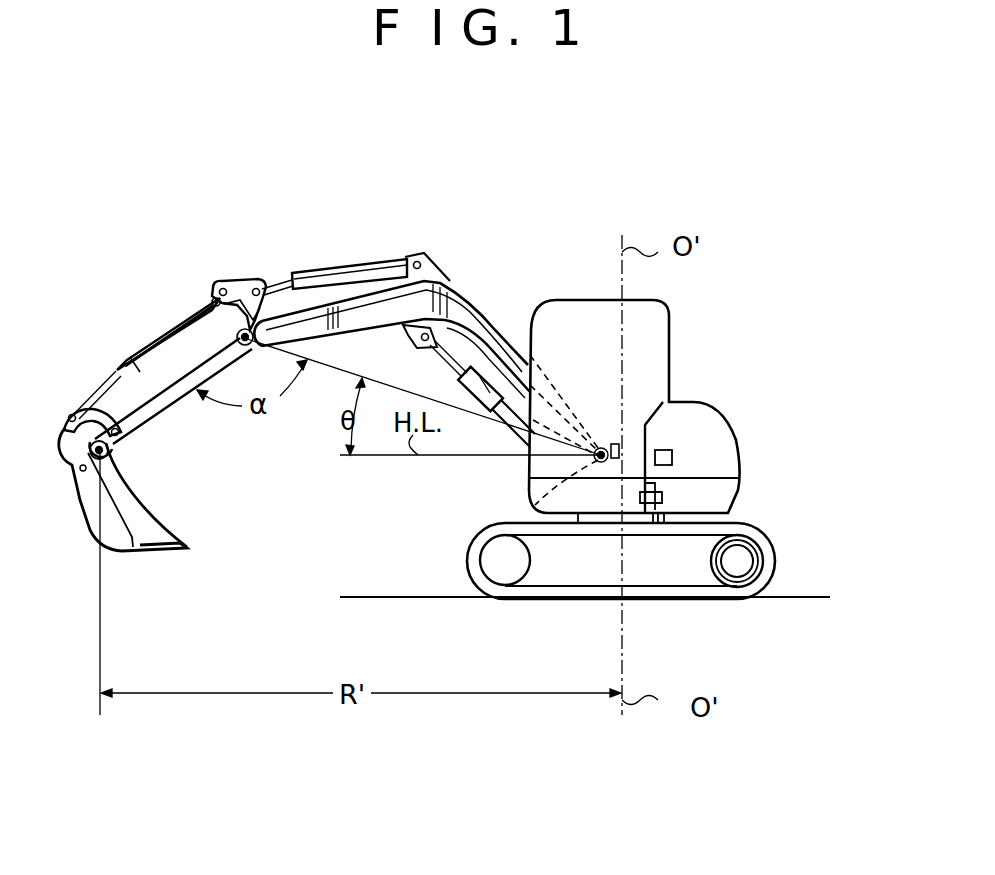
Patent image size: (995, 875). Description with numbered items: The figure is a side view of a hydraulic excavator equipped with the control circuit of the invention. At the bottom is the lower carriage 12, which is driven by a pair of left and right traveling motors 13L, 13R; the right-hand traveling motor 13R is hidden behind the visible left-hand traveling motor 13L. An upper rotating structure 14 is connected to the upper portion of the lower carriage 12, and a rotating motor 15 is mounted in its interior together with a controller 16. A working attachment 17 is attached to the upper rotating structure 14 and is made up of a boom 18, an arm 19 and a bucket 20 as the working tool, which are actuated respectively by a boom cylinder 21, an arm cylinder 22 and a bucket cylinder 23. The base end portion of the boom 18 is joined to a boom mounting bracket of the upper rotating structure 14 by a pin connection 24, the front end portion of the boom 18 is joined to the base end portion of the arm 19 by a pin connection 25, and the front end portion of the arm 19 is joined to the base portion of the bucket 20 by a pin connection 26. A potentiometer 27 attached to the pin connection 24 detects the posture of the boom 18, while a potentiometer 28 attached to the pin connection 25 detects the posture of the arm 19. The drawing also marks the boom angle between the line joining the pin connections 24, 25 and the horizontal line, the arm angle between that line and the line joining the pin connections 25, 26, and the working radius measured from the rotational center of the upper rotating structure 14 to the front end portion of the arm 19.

The lower carriage 12 is at (695, 543).
The left-hand traveling motor 13L is at (817, 561).
The right-hand traveling motor 13R is at (760, 567).
The upper rotating structure 14 is at (642, 409).
The rotating motor 15 is at (662, 497).
The controller 16 is at (672, 462).
The working attachment 17 is at (291, 381).
The boom 18 is at (473, 292).
The arm 19 is at (235, 286).
The bucket 20 is at (83, 522).
The boom cylinder 21 is at (460, 386).
The arm cylinder 22 is at (370, 259).
The bucket cylinder 23 is at (146, 340).
The pin connection 24 is at (596, 458).
The pin connection 25 is at (212, 300).
The pin connection 26 is at (108, 450).
The potentiometer 27 is at (535, 505).
The potentiometer 28 is at (250, 329).